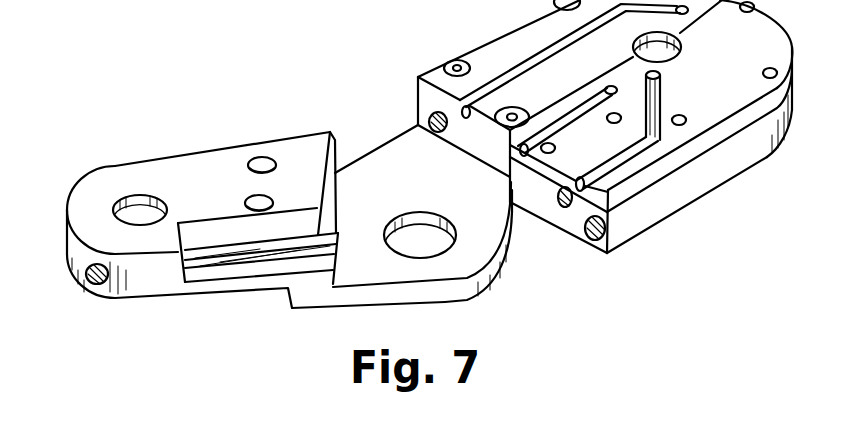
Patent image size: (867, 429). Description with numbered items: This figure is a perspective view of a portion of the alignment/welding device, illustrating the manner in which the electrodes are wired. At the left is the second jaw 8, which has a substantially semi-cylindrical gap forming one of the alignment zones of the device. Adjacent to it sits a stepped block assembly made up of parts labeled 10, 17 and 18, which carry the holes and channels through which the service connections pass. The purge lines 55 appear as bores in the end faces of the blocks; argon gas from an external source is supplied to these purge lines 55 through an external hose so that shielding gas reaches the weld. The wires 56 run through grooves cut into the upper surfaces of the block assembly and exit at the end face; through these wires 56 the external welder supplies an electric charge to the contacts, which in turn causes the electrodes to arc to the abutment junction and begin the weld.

The second jaw 8 is at (216, 198).
The base block 10 is at (535, 55).
The slide block 17 is at (716, 102).
The front face of slide block 18 is at (672, 196).
The purge lines 55 is at (425, 118).
The wires 56 is at (479, 120).